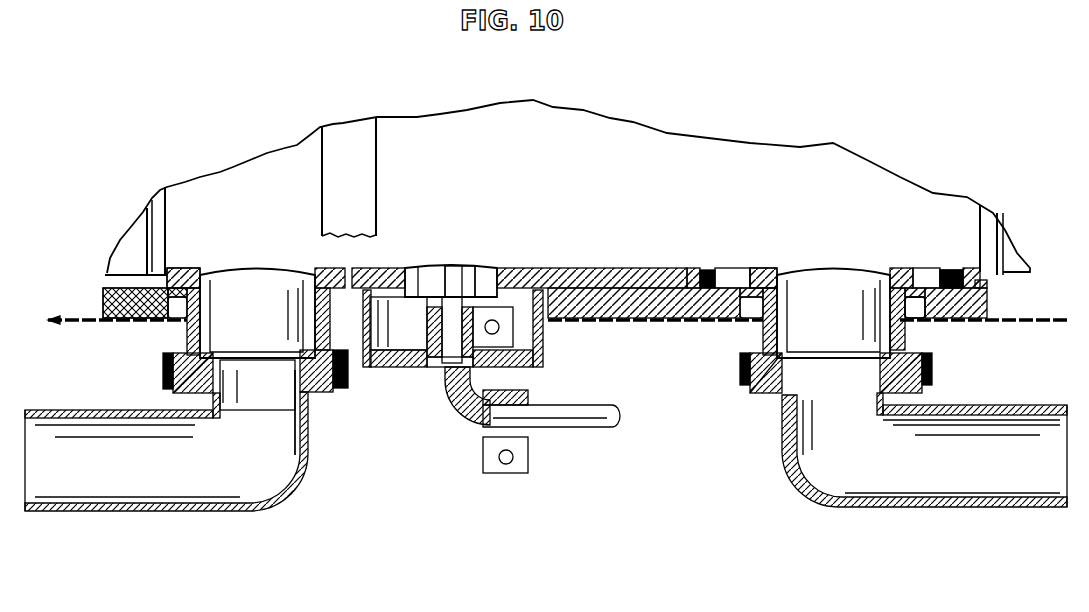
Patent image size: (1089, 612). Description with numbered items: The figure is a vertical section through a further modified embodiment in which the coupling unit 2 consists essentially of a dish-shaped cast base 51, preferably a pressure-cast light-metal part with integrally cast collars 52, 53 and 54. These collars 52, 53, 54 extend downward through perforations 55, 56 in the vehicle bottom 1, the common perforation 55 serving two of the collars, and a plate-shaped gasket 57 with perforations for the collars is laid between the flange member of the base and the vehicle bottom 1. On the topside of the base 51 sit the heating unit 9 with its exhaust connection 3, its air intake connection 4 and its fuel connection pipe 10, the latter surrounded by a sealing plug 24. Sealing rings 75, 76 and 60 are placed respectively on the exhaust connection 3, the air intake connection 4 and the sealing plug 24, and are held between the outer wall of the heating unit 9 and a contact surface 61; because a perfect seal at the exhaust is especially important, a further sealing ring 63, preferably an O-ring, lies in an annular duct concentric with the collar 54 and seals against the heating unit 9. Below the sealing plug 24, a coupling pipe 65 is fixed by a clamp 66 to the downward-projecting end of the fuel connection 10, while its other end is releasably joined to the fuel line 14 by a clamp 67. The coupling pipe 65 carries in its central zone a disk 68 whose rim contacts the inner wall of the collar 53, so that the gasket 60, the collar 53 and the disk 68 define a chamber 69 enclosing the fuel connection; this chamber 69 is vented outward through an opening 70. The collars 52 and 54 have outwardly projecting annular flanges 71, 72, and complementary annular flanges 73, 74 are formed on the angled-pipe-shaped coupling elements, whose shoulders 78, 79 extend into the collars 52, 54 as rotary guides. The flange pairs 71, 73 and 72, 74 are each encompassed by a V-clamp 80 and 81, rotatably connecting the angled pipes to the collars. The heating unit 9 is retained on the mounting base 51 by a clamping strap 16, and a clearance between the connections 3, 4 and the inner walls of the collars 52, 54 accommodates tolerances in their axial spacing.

The vehicle bottom 1 is at (1043, 322).
The coupling unit 2 is at (72, 292).
The exhaust connection 3 is at (838, 290).
The air intake connection 4 is at (257, 278).
The heating unit 9 is at (828, 172).
The fuel connection pipe 10 is at (448, 306).
The fuel line 14 is at (597, 413).
The clamping strap 16 is at (342, 145).
The sealing plug 24 is at (468, 276).
The base 51 is at (630, 277).
The collar 52 is at (180, 335).
The collar 53 is at (547, 338).
The collar 54 is at (900, 332).
The perforation 55 is at (363, 373).
The perforation 56 is at (753, 327).
The gasket 57 is at (990, 304).
The sealing ring 60 is at (385, 270).
The contact surface 61 is at (128, 292).
The sealing ring 63 is at (955, 277).
The coupling pipe 65 is at (473, 433).
The clamp 66 is at (502, 313).
The clamp 67 is at (523, 457).
The disk 68 is at (540, 367).
The chamber 69 is at (398, 367).
The opening 70 is at (417, 367).
The annular flange 71 is at (932, 360).
The annular flange 72 is at (165, 362).
The annular flange 73 is at (773, 383).
The annular flange 74 is at (193, 388).
The sealing ring 75 is at (758, 277).
The sealing ring 76 is at (186, 277).
The shoulder 78 is at (742, 363).
The shoulder 79 is at (308, 378).
The V-clamp 80 is at (910, 383).
The V-clamp 81 is at (347, 393).